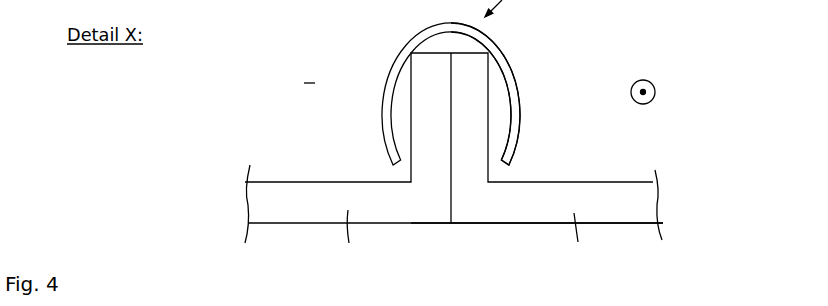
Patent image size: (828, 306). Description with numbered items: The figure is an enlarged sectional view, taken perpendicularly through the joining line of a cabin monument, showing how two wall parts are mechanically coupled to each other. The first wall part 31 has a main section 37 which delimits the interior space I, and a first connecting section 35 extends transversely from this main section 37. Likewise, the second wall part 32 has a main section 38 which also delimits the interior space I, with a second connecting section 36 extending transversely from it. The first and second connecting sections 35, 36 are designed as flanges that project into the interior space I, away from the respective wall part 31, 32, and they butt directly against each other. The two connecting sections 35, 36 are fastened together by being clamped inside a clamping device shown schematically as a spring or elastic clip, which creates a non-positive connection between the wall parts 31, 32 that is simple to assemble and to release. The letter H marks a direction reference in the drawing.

The first wall part 31 is at (280, 230).
The second wall part 32 is at (508, 232).
The first connecting section 35 is at (417, 83).
The second connecting section 36 is at (478, 82).
The main section of the first wall part 37 is at (339, 243).
The main section of the second wall part 38 is at (580, 247).
The height direction H is at (655, 86).
The interior space I is at (309, 74).